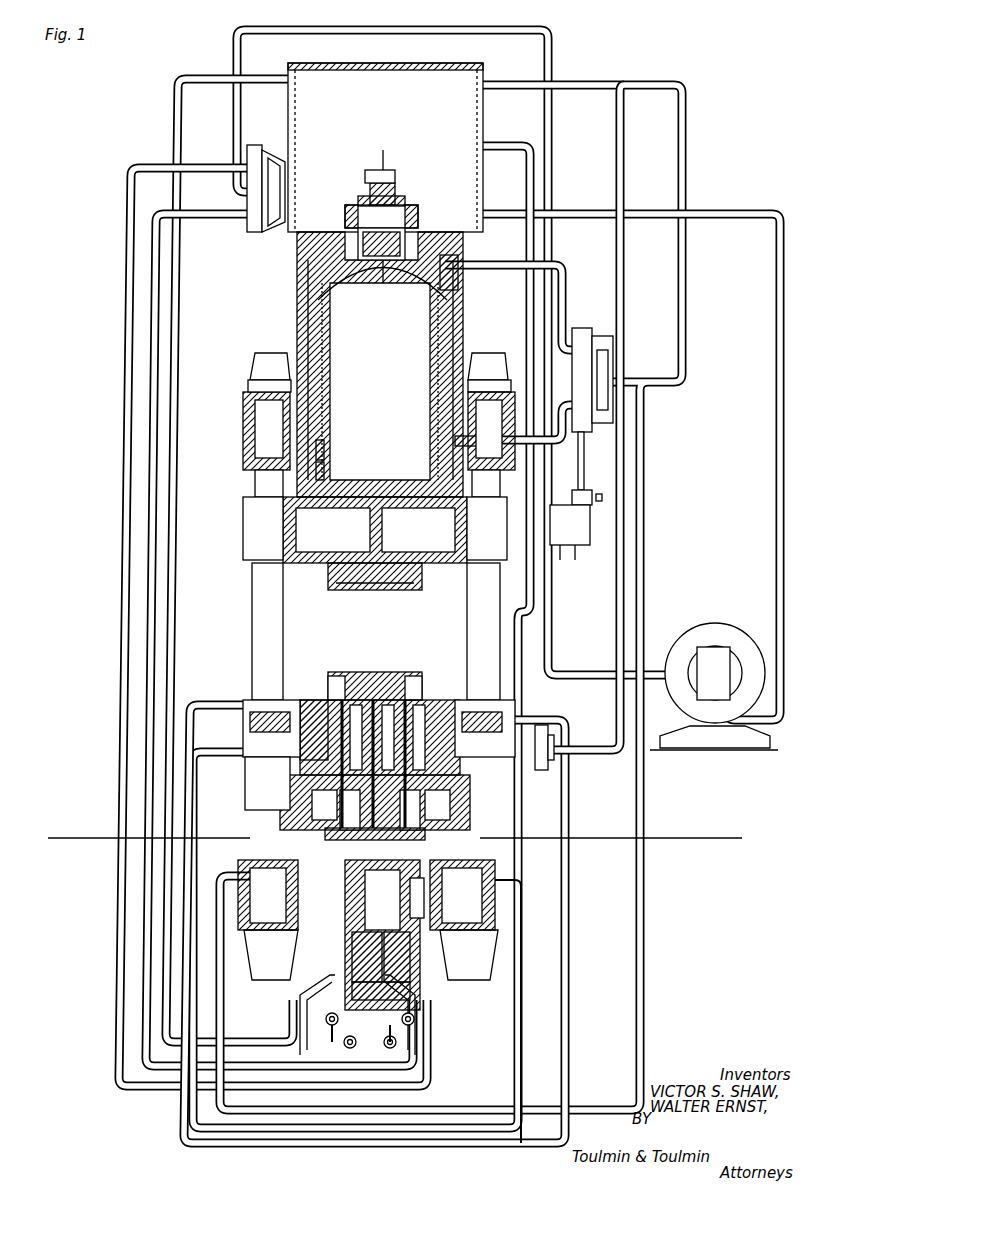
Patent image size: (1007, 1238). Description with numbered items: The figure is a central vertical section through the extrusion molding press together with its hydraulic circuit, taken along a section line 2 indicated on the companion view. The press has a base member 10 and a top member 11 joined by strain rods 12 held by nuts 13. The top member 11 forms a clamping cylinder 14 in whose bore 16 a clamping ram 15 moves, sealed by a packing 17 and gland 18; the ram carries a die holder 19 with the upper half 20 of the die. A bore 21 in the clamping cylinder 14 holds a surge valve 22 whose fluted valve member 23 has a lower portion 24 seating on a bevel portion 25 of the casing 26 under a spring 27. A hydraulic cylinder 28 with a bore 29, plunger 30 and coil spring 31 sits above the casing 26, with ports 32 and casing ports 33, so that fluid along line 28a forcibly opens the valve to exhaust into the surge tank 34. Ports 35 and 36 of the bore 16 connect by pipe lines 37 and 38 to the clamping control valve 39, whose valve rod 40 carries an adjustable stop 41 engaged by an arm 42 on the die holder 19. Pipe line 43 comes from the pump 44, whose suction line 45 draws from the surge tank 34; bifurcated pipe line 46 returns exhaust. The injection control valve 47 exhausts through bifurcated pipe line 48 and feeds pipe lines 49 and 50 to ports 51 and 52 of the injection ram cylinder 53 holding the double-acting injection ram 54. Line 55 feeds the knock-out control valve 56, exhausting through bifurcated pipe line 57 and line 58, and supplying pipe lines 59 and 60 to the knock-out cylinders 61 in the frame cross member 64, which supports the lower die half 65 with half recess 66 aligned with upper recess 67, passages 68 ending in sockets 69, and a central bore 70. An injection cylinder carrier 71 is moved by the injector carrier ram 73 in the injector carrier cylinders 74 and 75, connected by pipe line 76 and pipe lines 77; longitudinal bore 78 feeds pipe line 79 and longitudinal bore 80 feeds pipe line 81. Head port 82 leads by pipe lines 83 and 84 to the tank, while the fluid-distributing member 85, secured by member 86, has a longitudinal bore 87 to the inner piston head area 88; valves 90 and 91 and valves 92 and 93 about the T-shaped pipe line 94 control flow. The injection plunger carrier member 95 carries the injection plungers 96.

The pipe 2 is at (383, 110).
The base member 10 is at (278, 932).
The top member 11 is at (243, 420).
The strain rods 12 is at (252, 599).
The nuts 13 is at (268, 353).
The clamping cylinder 14 is at (298, 294).
The clamping ram 15 is at (325, 313).
The bore 16 is at (360, 364).
The packing 17 is at (324, 448).
The gland 18 is at (324, 470).
The die holder 19 is at (312, 565).
The upper half of the die 20 is at (330, 580).
The bore 21 is at (408, 222).
The surge valve 22 is at (395, 187).
The fluted valve member 23 is at (412, 208).
The lower portion 24 is at (345, 212).
The bevel portion 25 is at (455, 217).
The surge valve casing 26 is at (364, 202).
The spring 27 is at (383, 262).
The hydraulic cylinder 28 is at (375, 170).
The line 28a is at (508, 150).
The bore 29 is at (376, 174).
The plunger 30 is at (385, 170).
The coil spring 31 is at (400, 197).
The ports 32 is at (364, 190).
The ports 33 is at (380, 292).
The surge tank 34 is at (483, 112).
The port 35 is at (458, 284).
The port 36 is at (455, 441).
The pipe line 37 is at (567, 272).
The pipe line 38 is at (476, 430).
The clamping control valve 39 is at (583, 328).
The valve rod 40 is at (584, 454).
The adjustable stop 41 is at (588, 490).
The arm 42 is at (590, 525).
The pipe line 43 is at (235, 52).
The pump 44 is at (690, 634).
The suction line 45 is at (779, 593).
The bifurcated pipe line 46 is at (684, 292).
The injection control valve 47 is at (258, 145).
The bifurcated pipe line 48 is at (268, 222).
The pipe line 49 is at (160, 152).
The pipe line 50 is at (205, 211).
The port 51 is at (396, 972).
The port 52 is at (424, 896).
The injection ram cylinder 53 is at (350, 960).
The injection ram 54 is at (350, 944).
The line 55 is at (516, 633).
The knock-out control valve 56 is at (543, 724).
The bifurcated pipe line 57 is at (585, 750).
The line 58 is at (625, 660).
The pipe line 59 is at (222, 712).
The pipe line 60 is at (214, 760).
The knock-out cylinders 61 is at (475, 705).
The frame cross member 64 is at (280, 700).
The lower die half 65 is at (414, 676).
The half recess 66 is at (360, 672).
The upper recess 67 is at (372, 585).
The passages 68 is at (335, 676).
The sockets 69 is at (343, 694).
The central bore 70 is at (308, 700).
The injection cylinder carrier 71 is at (245, 792).
The injector carrier ram 73 is at (470, 832).
The injector carrier cylinder 74 is at (284, 914).
The injector carrier cylinder 75 is at (458, 918).
The pipe line 76 is at (532, 922).
The pipe lines 77 is at (642, 522).
The longitudinal bore 78 is at (268, 895).
The pipe line 79 is at (92, 838).
The longitudinal bore 80 is at (463, 895).
The pipe line 81 is at (686, 838).
The head port 82 is at (352, 975).
The pipe line 83 is at (332, 1033).
The pipe line 84 is at (264, 1039).
The fluid-distributing member 85 is at (398, 946).
The member 86 is at (410, 1000).
The longitudinal bore 87 is at (352, 992).
The inner piston head area 88 is at (382, 935).
The valve 90 is at (414, 1019).
The valve 91 is at (326, 1019).
The valve 92 is at (346, 1046).
The valve 93 is at (390, 1046).
The T-shaped pipe line 94 is at (392, 1031).
The injection plunger carrier member 95 is at (376, 840).
The injection plungers 96 is at (373, 807).